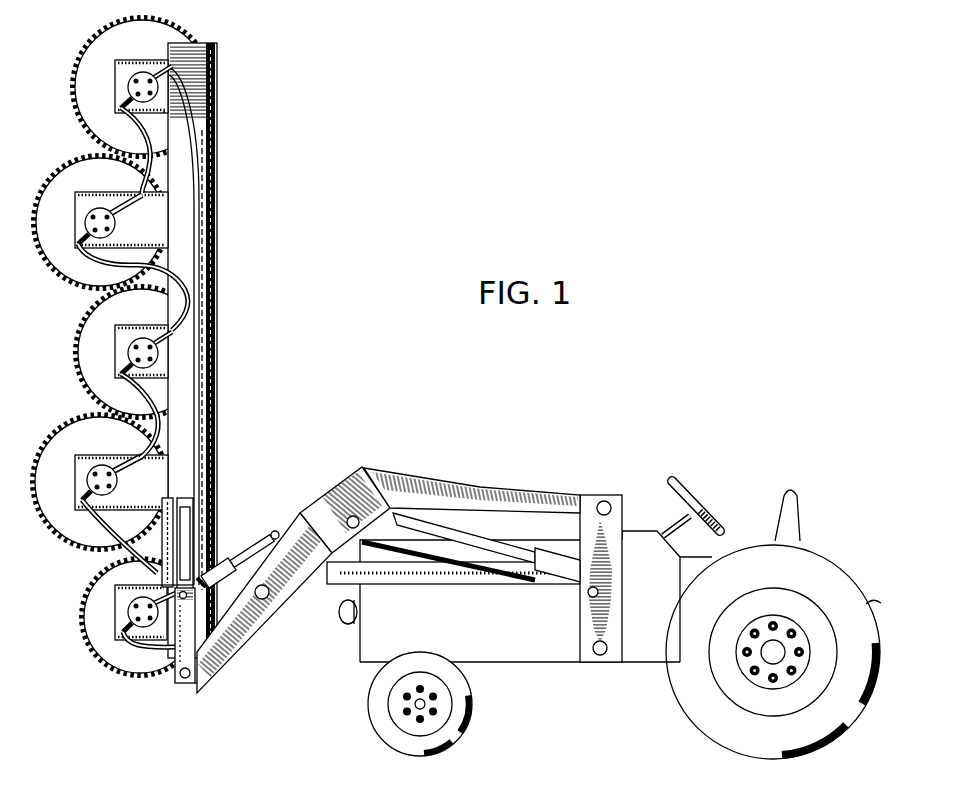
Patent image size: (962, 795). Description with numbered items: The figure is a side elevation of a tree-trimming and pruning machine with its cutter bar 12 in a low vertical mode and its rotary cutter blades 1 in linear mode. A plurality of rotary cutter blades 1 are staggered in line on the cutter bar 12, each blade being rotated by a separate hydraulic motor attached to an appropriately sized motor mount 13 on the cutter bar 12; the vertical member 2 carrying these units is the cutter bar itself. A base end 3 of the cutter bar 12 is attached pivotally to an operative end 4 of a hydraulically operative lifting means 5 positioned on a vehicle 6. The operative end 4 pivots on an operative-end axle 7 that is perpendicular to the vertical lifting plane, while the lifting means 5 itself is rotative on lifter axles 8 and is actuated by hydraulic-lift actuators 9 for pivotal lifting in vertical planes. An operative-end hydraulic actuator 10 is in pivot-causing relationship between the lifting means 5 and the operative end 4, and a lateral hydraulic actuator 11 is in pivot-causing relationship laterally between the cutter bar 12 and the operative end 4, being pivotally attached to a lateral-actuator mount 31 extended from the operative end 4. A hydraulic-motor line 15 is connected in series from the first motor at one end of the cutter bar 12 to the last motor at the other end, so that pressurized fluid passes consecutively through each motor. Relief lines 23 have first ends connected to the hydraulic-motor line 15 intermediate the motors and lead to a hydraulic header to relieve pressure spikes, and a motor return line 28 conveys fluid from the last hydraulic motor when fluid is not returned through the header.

The rotary cutter blade 1 is at (204, 334).
The vertical mast 2 is at (251, 350).
The base end 3 is at (158, 660).
The operative end 4 is at (217, 652).
The hydraulically operative lifting means 5 is at (362, 465).
The vehicle 6 is at (510, 627).
The operative-end axle 7 is at (197, 683).
The lifter axle 8 is at (604, 506).
The hydraulic-lift actuator 9 is at (430, 535).
The operative-end hydraulic actuator 10 is at (252, 548).
The lateral hydraulic actuator 11 is at (160, 560).
The cutter bar 12 is at (163, 112).
The motor mount 13 is at (160, 217).
The hydraulic-motor line 15 is at (92, 265).
The relief line 23 is at (217, 270).
The motor return line 28 is at (97, 134).
The lateral-actuator mount 31 is at (163, 531).